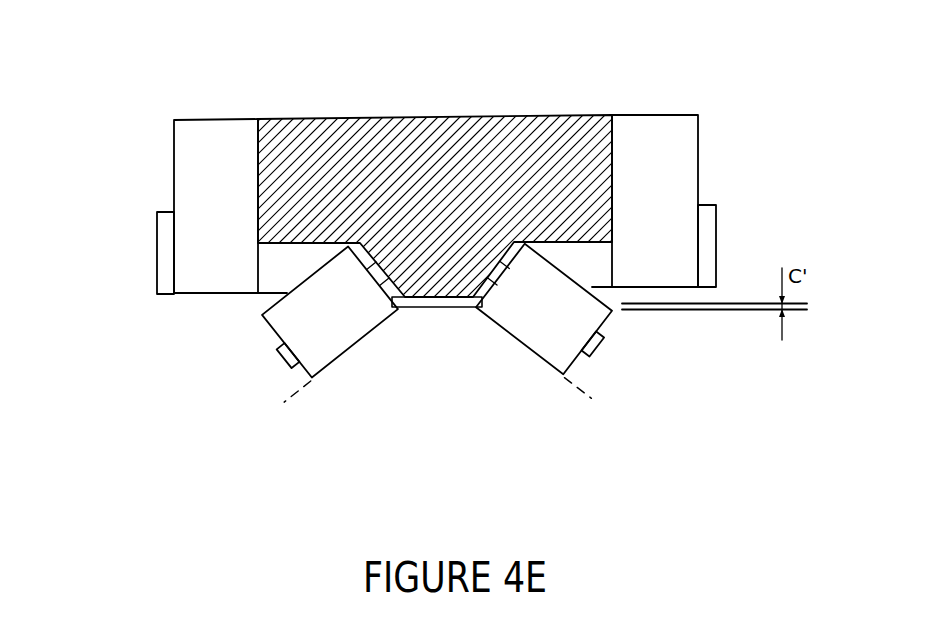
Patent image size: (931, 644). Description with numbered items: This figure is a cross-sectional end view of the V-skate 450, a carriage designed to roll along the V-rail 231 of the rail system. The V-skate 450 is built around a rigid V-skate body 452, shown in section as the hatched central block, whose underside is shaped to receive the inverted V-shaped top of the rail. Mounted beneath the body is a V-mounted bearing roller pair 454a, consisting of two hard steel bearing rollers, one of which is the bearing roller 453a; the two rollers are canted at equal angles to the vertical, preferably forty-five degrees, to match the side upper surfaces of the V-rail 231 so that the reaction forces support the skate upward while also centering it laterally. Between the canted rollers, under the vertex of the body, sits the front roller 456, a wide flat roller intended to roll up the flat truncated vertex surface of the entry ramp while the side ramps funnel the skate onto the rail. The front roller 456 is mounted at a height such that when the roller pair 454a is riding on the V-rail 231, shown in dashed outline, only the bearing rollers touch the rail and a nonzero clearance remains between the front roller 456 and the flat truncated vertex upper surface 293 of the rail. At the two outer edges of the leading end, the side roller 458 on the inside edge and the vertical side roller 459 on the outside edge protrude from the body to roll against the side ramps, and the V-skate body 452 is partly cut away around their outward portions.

The V-skate 450 is at (425, 176).
The V-skate body 452 is at (353, 117).
The bearing roller 453a is at (303, 366).
The V-mounted bearing roller pair 454a is at (573, 357).
The front roller 456 is at (437, 308).
The side roller 458 is at (158, 262).
The vertical side roller 459 is at (716, 238).
The flat truncated vertex upper surface 293 is at (241, 459).
The V-rail 231 is at (654, 474).